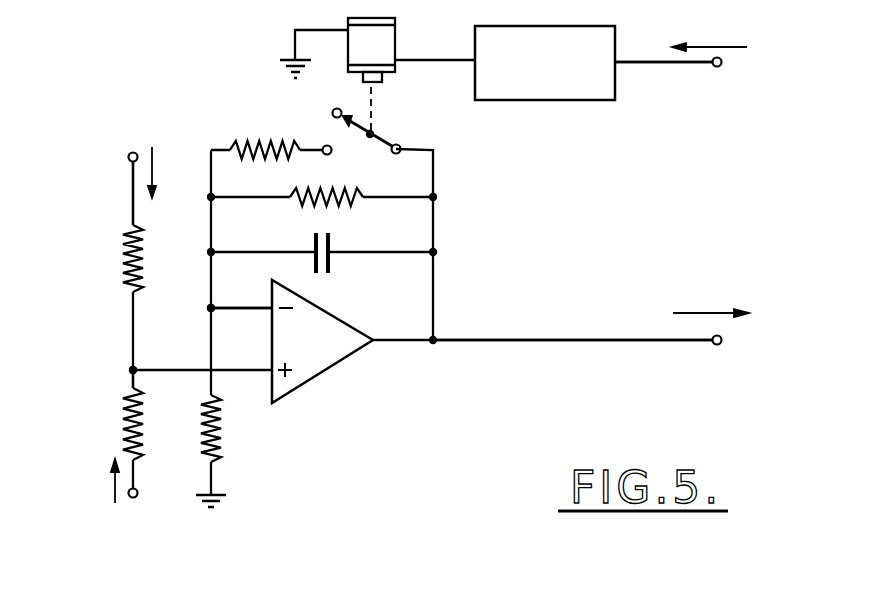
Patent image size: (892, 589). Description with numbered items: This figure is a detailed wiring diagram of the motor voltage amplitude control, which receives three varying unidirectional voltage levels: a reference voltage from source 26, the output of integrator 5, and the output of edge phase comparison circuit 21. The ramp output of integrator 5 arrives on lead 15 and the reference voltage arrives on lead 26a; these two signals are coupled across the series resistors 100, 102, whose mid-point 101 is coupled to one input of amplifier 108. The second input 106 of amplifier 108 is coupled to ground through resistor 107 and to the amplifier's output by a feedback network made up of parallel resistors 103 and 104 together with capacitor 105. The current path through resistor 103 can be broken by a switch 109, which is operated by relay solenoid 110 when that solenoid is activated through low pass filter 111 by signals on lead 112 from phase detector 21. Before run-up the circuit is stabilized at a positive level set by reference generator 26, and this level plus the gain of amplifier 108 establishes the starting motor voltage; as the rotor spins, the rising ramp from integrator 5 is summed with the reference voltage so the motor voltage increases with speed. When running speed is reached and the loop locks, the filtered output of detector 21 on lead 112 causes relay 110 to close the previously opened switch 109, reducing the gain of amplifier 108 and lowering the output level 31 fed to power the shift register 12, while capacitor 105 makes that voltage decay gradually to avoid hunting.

The integrator 5 is at (121, 141).
The lead 15 is at (133, 195).
The reference voltage source 26 is at (180, 541).
The lead 26a is at (133, 390).
The edge phase comparison circuit 21 is at (772, 116).
The shift register 12 is at (760, 397).
The amplifier output line to shift register 31 is at (620, 339).
The series resistor 100 is at (131, 270).
The mid-point 101 is at (131, 370).
The series resistor 102 is at (124, 441).
The resistor 103 is at (257, 148).
The resistor 104 is at (310, 193).
The capacitor 105 is at (331, 243).
The second input 106 is at (211, 309).
The resistor 107 is at (216, 426).
The amplifier 108 is at (340, 365).
The switch 109 is at (373, 132).
The relay solenoid 110 is at (396, 40).
The low pass filter 111 is at (540, 101).
The lead 112 is at (655, 62).